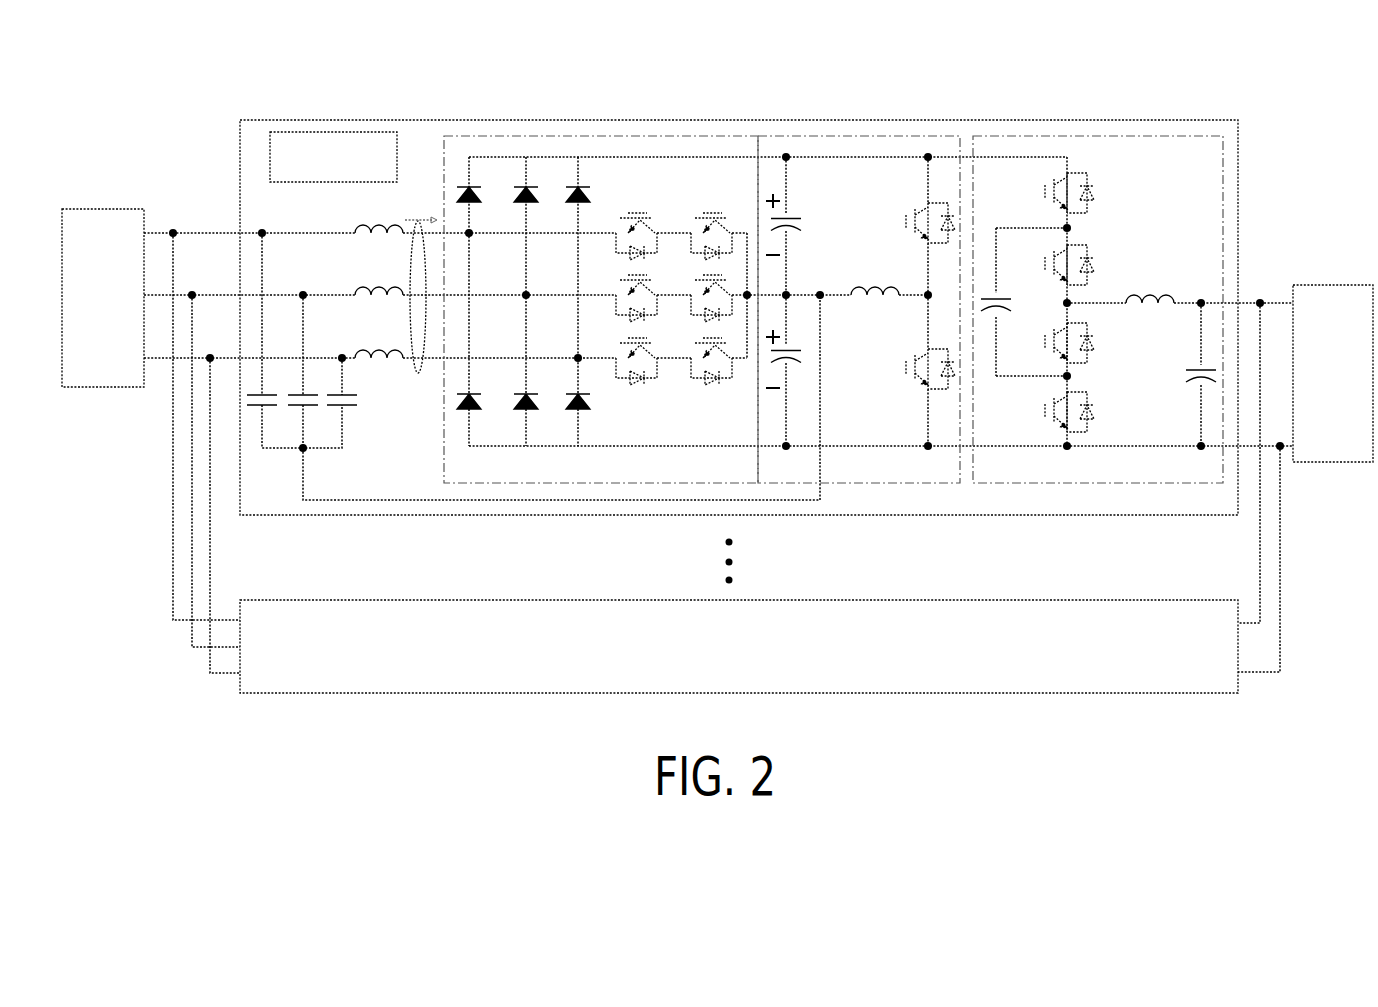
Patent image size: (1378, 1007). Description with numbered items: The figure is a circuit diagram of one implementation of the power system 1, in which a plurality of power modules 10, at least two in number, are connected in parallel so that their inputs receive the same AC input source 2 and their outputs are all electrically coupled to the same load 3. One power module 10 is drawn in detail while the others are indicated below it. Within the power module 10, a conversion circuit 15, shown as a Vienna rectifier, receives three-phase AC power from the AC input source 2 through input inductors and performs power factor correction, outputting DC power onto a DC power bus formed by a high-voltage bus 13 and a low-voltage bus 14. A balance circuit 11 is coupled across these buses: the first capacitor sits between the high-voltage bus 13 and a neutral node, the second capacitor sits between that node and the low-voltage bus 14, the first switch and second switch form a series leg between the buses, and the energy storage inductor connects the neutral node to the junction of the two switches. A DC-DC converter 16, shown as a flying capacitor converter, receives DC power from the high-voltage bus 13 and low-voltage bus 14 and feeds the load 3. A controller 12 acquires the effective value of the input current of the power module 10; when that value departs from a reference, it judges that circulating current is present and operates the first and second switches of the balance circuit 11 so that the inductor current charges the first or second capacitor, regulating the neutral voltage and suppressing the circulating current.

The power system 1 is at (1349, 88).
The AC input source 2 is at (104, 209).
The load 3 is at (1337, 286).
The power module 10 is at (1181, 120).
The balance circuit 11 is at (859, 316).
The controller 12 is at (342, 132).
The high-voltage bus 13 is at (800, 152).
The low-voltage bus 14 is at (804, 448).
The conversion circuit 15 is at (582, 136).
The DC-DC converter 16 is at (990, 136).